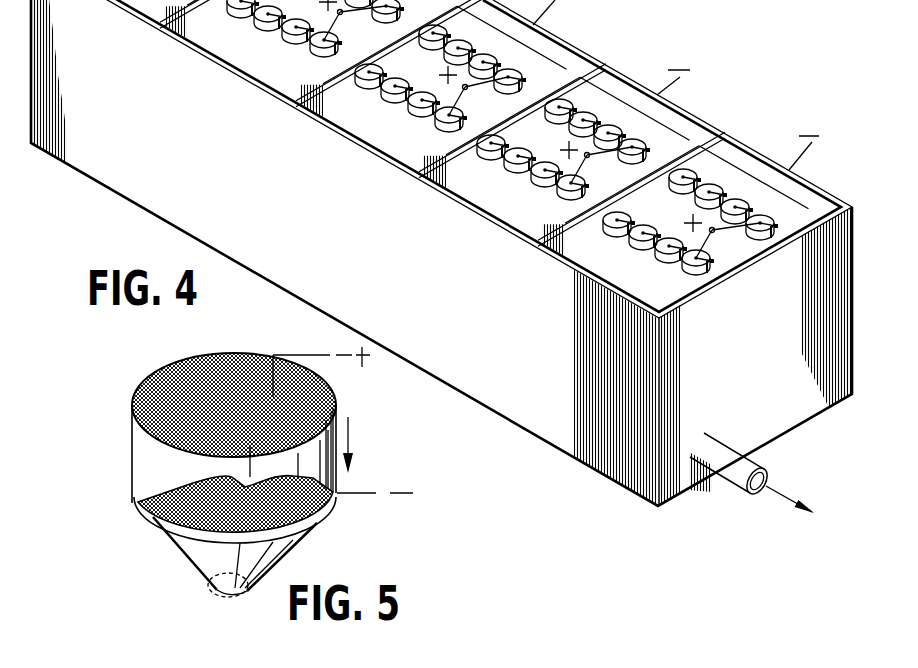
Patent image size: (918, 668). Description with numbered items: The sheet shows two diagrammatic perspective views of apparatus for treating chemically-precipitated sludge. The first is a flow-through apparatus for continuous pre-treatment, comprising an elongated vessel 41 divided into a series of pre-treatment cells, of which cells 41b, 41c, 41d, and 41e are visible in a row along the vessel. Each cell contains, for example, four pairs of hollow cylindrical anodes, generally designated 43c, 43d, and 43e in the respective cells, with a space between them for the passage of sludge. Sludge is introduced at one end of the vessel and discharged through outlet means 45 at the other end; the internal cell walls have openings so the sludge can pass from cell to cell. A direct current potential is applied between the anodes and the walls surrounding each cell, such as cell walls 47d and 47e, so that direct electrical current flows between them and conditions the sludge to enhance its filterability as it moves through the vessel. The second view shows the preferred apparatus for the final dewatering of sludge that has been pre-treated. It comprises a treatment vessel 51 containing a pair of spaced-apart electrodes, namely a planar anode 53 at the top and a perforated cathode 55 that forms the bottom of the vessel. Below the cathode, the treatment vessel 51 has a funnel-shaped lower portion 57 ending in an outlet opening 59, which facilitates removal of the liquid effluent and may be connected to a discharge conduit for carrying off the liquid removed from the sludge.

In FIG. 4, the vessel 41 is at (857, 206).
In FIG. 4, the pre-treatment cell 41b is at (267, 60).
In FIG. 4, the pre-treatment cell 41c is at (464, 69).
In FIG. 4, the pre-treatment cell 41d is at (585, 144).
In FIG. 4, the pre-treatment cell 41e is at (687, 217).
In FIG. 4, the hollow cylindrical anodes 43c is at (519, 94).
In FIG. 4, the hollow cylindrical anodes 43d is at (652, 158).
In FIG. 4, the hollow cylindrical anodes 43e is at (713, 262).
In FIG. 4, the outlet means 45 is at (746, 466).
In FIG. 4, the cell wall 47d is at (645, 82).
In FIG. 4, the cell wall 47e is at (759, 148).
In FIG. 5, the treatment vessel 51 is at (132, 467).
In FIG. 5, the anode 53 is at (141, 385).
In FIG. 5, the cathode 55 is at (317, 521).
In FIG. 5, the funnel-shaped lower portion 57 is at (281, 560).
In FIG. 5, the outlet opening 59 is at (233, 598).